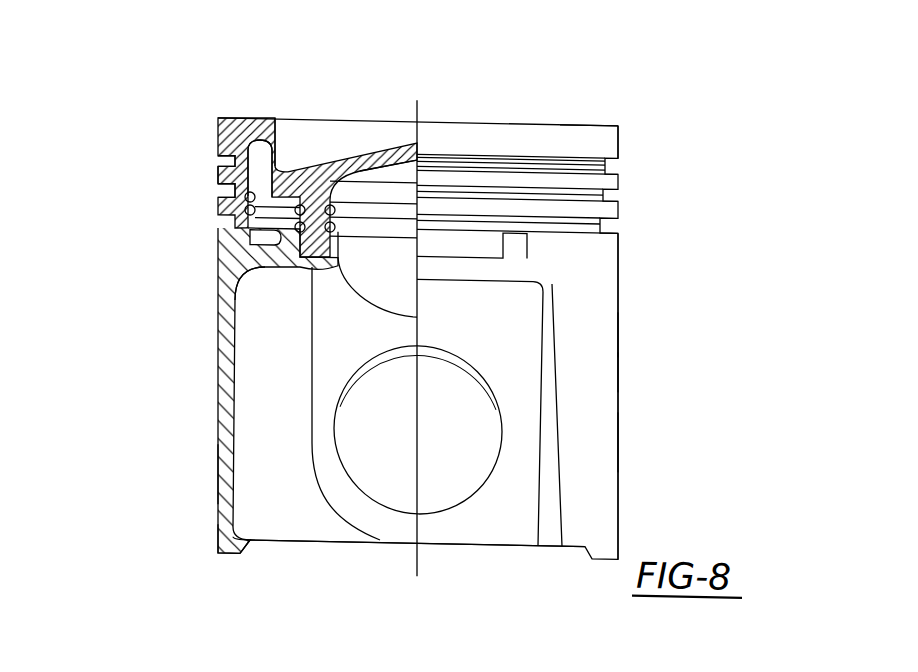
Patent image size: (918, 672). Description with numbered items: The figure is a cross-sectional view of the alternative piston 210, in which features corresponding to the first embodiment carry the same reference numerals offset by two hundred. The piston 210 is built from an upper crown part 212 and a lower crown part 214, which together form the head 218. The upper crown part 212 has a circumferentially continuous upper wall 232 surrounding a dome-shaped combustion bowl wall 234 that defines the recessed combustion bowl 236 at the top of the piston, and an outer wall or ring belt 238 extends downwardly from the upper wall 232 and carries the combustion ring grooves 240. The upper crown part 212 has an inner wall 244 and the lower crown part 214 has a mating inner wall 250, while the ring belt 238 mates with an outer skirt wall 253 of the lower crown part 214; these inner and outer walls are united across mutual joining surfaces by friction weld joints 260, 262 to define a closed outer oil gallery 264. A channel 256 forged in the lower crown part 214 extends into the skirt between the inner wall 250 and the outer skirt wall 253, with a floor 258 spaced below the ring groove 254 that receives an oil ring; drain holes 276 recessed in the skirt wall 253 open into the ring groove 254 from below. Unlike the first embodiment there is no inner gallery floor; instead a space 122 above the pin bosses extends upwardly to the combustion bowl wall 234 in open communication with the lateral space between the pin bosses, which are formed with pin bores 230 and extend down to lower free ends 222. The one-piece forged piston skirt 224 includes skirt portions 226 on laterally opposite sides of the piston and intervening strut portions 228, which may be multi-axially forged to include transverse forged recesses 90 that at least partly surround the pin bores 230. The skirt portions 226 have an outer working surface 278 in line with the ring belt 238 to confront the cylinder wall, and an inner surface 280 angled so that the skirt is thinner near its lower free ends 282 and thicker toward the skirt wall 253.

The transverse forged recess 90 is at (542, 277).
The space 122 is at (407, 172).
The piston 210 is at (678, 151).
The upper crown part 212 is at (621, 112).
The lower crown part 214 is at (628, 327).
The head 218 is at (626, 146).
The lower free end 222 is at (388, 535).
The piston skirt 224 is at (630, 432).
The skirt portion 226 is at (218, 414).
The strut portion 228 is at (330, 523).
The pin bore 230 is at (455, 488).
The upper wall 232 is at (228, 117).
The combustion bowl wall 234 is at (297, 146).
The combustion bowl 236 is at (372, 125).
The ring belt 238 is at (222, 174).
The combustion ring groove 240 is at (215, 156).
The inner wall 244 is at (330, 148).
The inner wall 250 is at (313, 264).
The outer skirt wall 253 is at (228, 256).
The ring groove 254 is at (234, 217).
The channel 256 is at (245, 232).
The floor 258 is at (242, 292).
The friction weld joint 260 is at (386, 160).
The friction weld joint 262 is at (283, 146).
The outer oil gallery 264 is at (257, 137).
The drain hole 276 is at (527, 232).
The outer working surface 278 is at (218, 466).
The inner surface 280 is at (248, 530).
The lower free end 282 is at (218, 551).